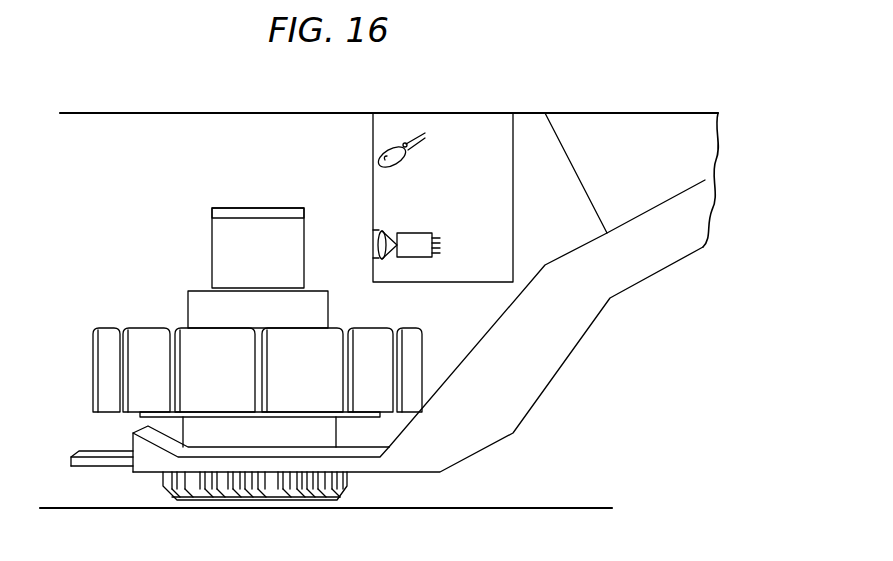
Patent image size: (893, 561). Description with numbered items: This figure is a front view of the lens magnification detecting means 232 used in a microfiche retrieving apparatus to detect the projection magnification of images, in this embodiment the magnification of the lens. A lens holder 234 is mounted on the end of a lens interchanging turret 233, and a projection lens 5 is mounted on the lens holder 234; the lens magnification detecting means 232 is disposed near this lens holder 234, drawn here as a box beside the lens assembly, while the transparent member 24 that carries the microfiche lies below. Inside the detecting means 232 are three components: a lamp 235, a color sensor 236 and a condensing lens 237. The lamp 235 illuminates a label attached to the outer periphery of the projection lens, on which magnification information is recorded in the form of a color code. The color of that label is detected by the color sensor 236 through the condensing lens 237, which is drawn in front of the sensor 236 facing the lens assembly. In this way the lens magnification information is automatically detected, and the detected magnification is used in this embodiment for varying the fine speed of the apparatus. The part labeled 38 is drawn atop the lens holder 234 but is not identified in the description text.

The projection lens 5 is at (232, 208).
The housing 38 is at (260, 230).
The lens holder 234 is at (188, 308).
The lamp 235 is at (390, 138).
The lens magnification detecting means 232 is at (480, 127).
The condensing lens 237 is at (389, 258).
The color sensor 236 is at (420, 252).
The lens interchanging turret 233 is at (625, 278).
The transparent member 24 is at (480, 520).